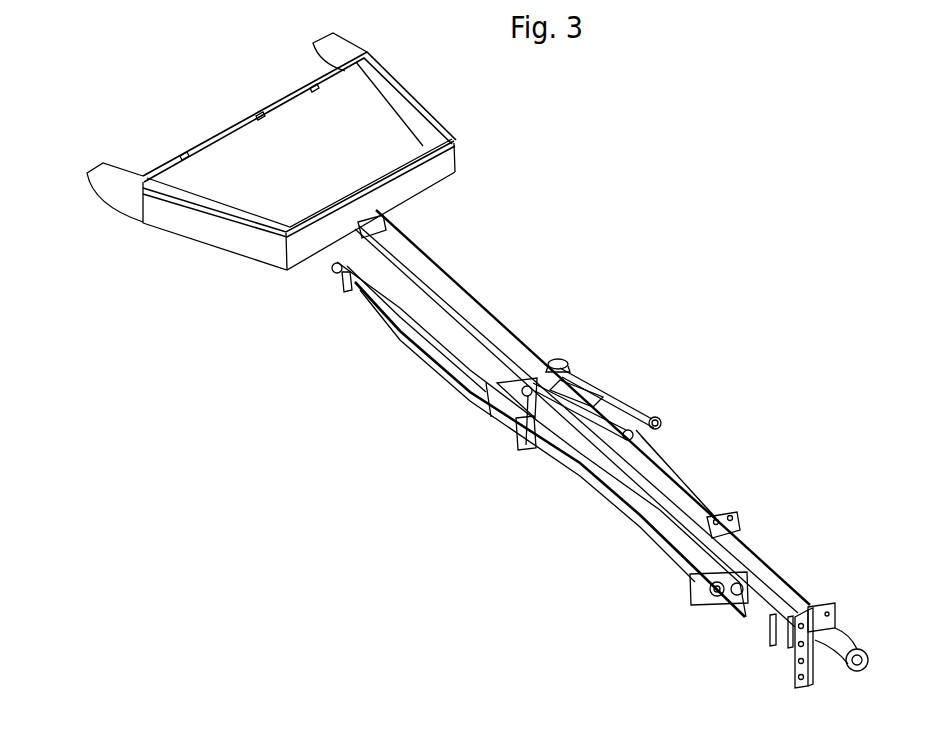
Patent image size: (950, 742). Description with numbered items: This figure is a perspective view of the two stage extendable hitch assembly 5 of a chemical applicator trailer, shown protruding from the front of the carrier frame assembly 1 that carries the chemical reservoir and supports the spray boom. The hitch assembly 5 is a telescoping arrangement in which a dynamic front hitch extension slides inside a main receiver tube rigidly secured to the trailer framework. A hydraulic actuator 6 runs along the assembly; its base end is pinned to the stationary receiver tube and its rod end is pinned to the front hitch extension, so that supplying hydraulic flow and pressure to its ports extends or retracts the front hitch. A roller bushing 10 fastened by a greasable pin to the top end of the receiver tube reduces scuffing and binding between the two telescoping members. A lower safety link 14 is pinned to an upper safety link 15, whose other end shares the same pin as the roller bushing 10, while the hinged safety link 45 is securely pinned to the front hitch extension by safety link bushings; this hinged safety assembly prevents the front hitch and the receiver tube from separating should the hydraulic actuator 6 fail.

The carrier frame assembly 1 is at (177, 220).
The two stage extendable hitch assembly 5 is at (457, 281).
The hydraulic actuator 6 is at (467, 397).
The roller bushing 10 is at (548, 357).
The lower safety link 14 is at (692, 477).
The upper safety link 15 is at (607, 380).
The hinged safety link 45 is at (663, 412).